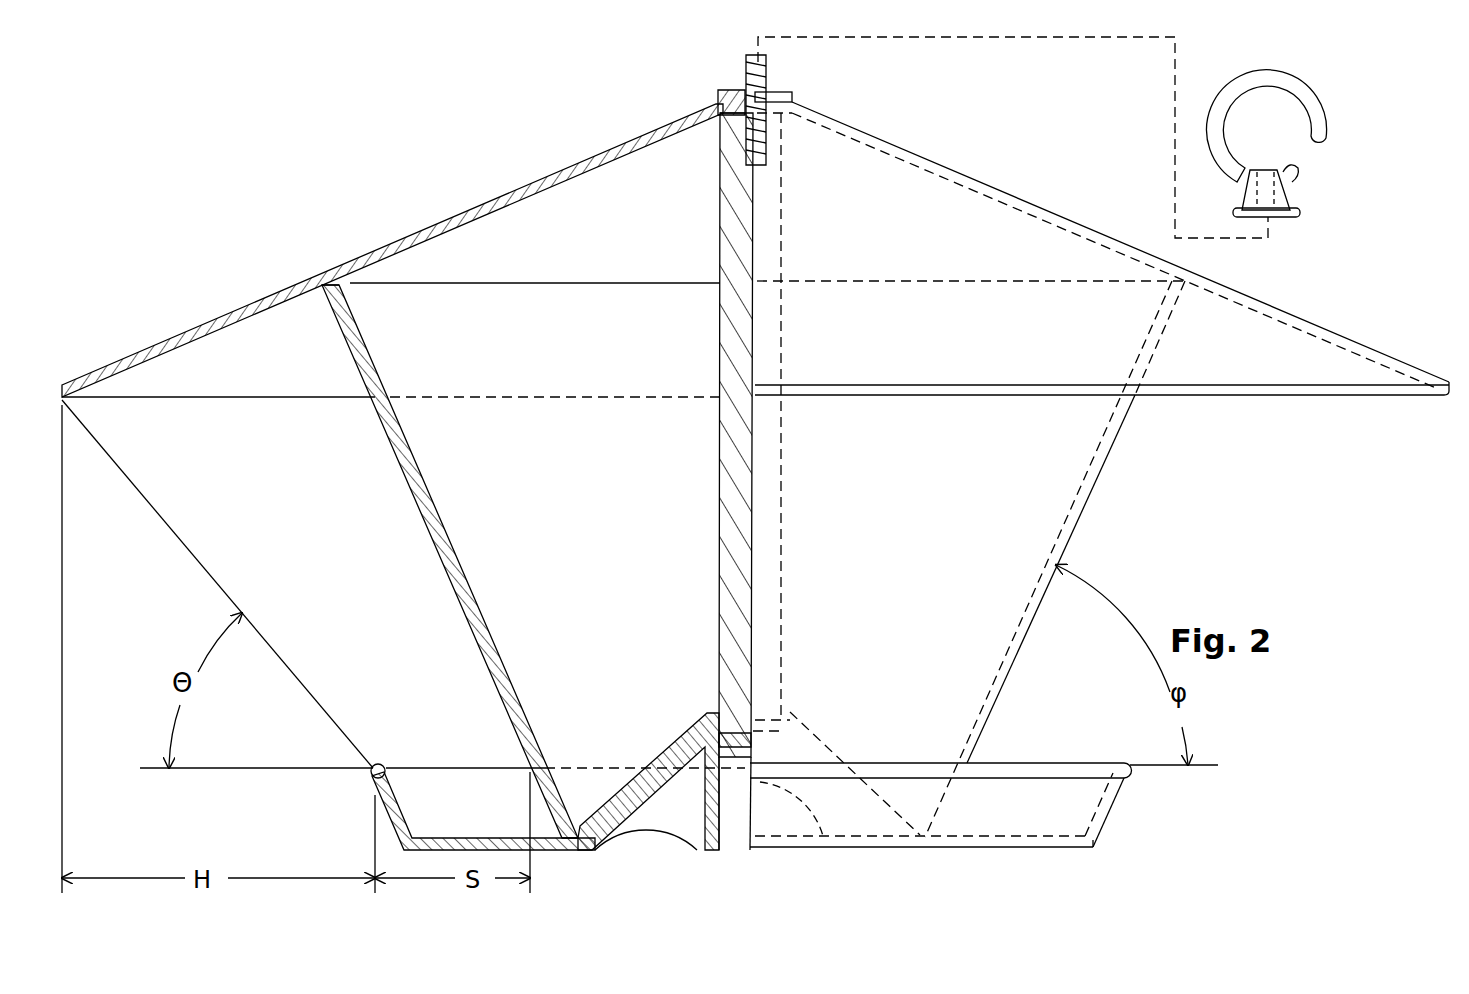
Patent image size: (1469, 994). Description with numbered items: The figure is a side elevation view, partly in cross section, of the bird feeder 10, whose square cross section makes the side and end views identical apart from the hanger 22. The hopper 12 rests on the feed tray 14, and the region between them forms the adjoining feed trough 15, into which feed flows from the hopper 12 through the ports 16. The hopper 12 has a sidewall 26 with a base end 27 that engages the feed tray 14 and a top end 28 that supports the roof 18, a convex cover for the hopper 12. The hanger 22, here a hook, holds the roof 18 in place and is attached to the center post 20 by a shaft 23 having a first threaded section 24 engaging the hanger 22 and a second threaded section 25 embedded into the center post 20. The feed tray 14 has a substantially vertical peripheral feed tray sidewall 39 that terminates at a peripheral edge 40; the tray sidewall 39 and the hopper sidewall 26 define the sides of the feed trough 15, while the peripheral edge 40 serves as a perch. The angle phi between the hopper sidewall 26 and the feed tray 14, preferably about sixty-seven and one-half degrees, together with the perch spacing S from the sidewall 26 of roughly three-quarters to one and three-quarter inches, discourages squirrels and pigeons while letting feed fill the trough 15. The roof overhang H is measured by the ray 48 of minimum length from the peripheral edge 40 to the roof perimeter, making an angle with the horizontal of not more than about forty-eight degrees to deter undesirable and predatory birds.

The bird feeder 10 is at (308, 128).
The hopper 12 is at (1095, 548).
The feed tray 14 is at (1138, 802).
The feed trough 15 is at (467, 807).
The ports 16 is at (560, 793).
The roof 18 is at (338, 262).
The center post 20 is at (720, 469).
The hanger 22 is at (1305, 217).
The shaft 23 is at (740, 80).
The first threaded section 24 is at (771, 63).
The second threaded section 25 is at (745, 147).
The hopper sidewall 26 is at (390, 455).
The base end 27 is at (580, 825).
The top end 28 is at (350, 290).
The peripheral feed tray sidewall 39 is at (1100, 827).
The peripheral edge 40 is at (367, 785).
The ray 48 is at (215, 583).